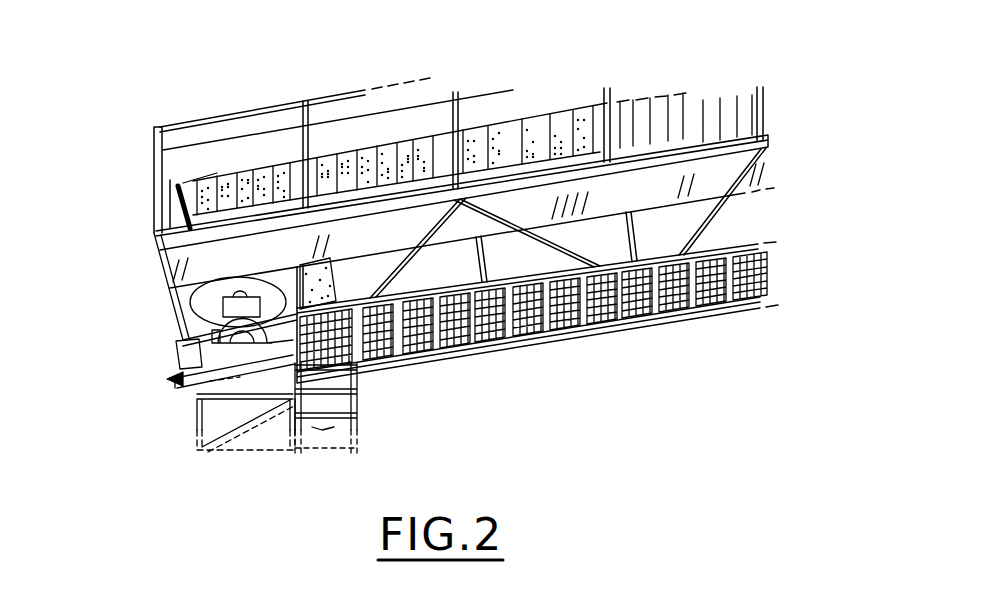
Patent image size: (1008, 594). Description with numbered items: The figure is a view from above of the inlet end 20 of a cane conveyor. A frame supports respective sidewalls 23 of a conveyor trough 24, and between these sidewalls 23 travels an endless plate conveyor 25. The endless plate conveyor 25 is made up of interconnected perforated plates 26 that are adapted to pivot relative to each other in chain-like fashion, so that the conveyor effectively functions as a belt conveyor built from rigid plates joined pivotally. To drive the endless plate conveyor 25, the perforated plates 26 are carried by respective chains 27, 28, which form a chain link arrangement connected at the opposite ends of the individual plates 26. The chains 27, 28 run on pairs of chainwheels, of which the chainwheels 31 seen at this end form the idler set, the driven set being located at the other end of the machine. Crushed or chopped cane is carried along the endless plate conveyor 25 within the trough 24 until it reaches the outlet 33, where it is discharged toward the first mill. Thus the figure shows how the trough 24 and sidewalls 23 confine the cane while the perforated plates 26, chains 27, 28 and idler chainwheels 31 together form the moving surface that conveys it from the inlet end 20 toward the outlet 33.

The inlet end 20 is at (151, 290).
The sidewalls 23 is at (257, 152).
The conveyor trough 24 is at (181, 188).
The endless plate conveyor 25 is at (627, 136).
The perforated plates 26 is at (477, 150).
The chain 27 is at (366, 137).
The chain 28 is at (546, 164).
The chainwheels 31 is at (172, 352).
The outlet 33 is at (238, 183).